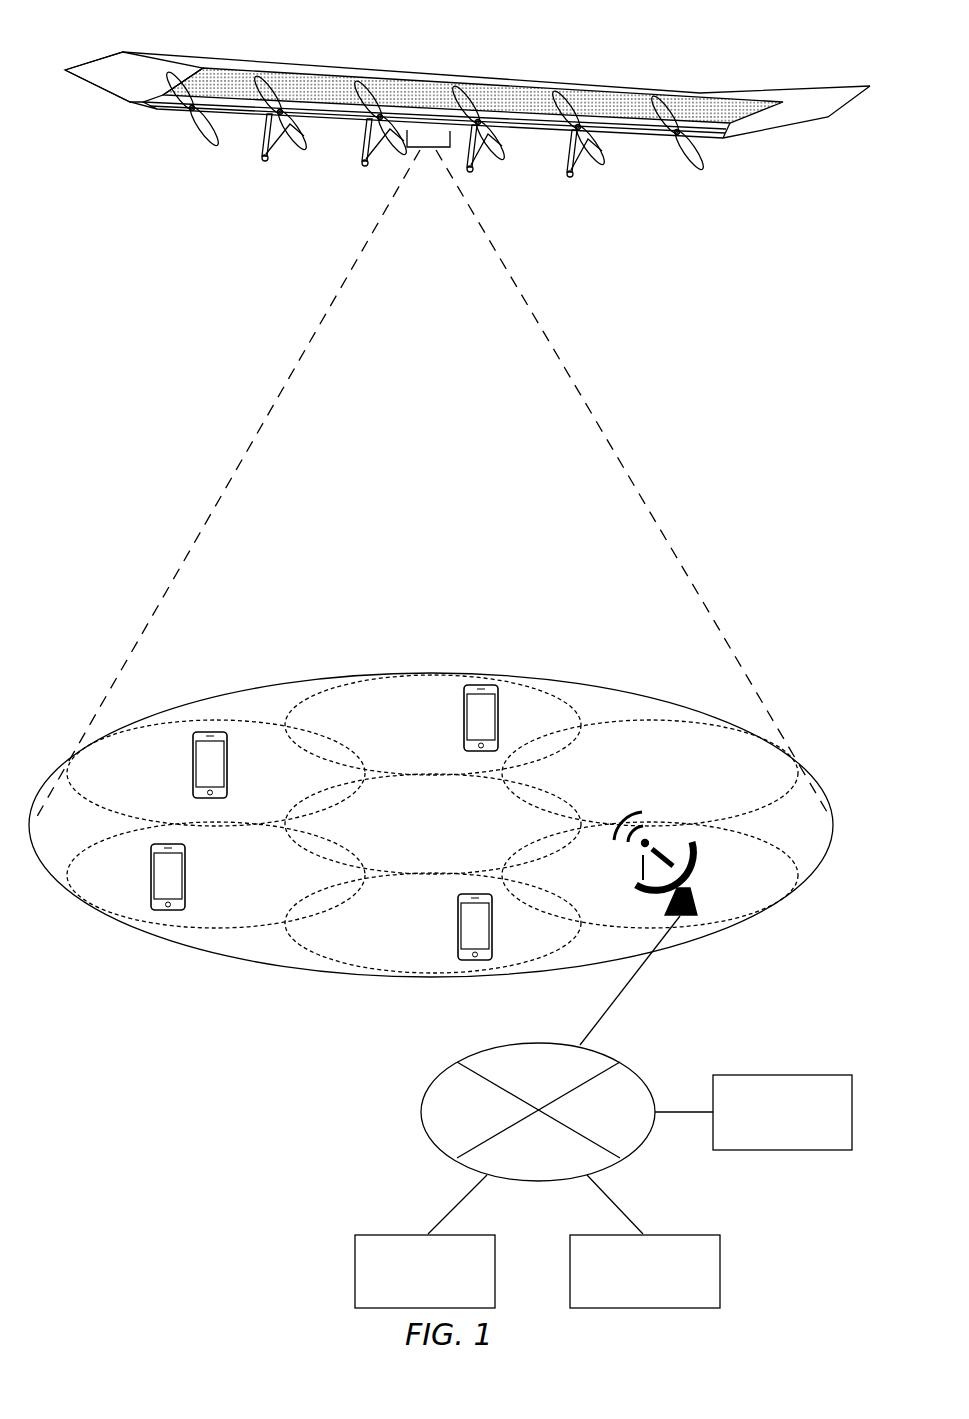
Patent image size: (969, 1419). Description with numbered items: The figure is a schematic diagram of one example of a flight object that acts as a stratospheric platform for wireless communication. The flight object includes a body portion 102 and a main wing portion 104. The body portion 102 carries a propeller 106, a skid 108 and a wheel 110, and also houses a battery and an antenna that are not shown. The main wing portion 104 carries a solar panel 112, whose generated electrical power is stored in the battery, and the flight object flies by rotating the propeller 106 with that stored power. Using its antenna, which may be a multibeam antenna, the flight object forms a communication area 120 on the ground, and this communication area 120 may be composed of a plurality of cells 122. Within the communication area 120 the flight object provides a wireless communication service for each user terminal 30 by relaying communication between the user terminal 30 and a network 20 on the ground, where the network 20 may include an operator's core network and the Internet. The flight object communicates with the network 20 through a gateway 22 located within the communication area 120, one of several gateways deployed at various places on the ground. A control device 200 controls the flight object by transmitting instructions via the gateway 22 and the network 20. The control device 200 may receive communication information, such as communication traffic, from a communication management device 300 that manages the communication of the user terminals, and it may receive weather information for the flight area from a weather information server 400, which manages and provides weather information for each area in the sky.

The body portion 102 is at (438, 80).
The main wing portion 104 is at (137, 62).
The propeller 106 is at (200, 124).
The skid 108 is at (257, 142).
The wheel 110 is at (273, 158).
The solar panel 112 is at (241, 72).
The communication area 120 is at (546, 684).
The cell 122 is at (430, 680).
The user terminal 30 is at (229, 762).
The gateway 22 is at (638, 869).
The network 20 is at (645, 1080).
The control device 200 is at (477, 1233).
The communication management device 300 is at (700, 1233).
The weather information server 400 is at (832, 1076).